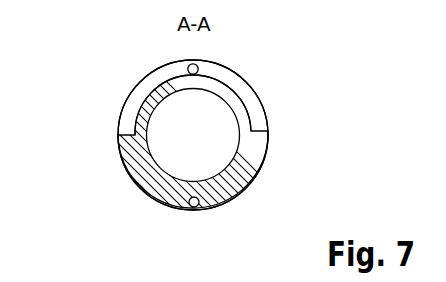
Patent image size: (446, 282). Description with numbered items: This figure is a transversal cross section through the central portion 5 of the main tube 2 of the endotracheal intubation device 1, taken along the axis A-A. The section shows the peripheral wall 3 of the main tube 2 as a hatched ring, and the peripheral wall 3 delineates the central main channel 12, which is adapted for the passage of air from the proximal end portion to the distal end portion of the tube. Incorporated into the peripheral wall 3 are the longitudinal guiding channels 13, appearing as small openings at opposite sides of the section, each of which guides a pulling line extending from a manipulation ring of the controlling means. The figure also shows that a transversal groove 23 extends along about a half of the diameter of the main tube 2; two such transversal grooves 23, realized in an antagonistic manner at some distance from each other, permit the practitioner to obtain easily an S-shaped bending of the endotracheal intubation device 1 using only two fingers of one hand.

The endotracheal intubation device 1 is at (116, 182).
The main tube 2 is at (204, 216).
The peripheral wall 3 is at (235, 182).
The central portion 5 is at (155, 57).
The main channel 12 is at (162, 137).
The longitudinal guiding channel 13 is at (205, 59).
The transversal groove 23 is at (126, 97).